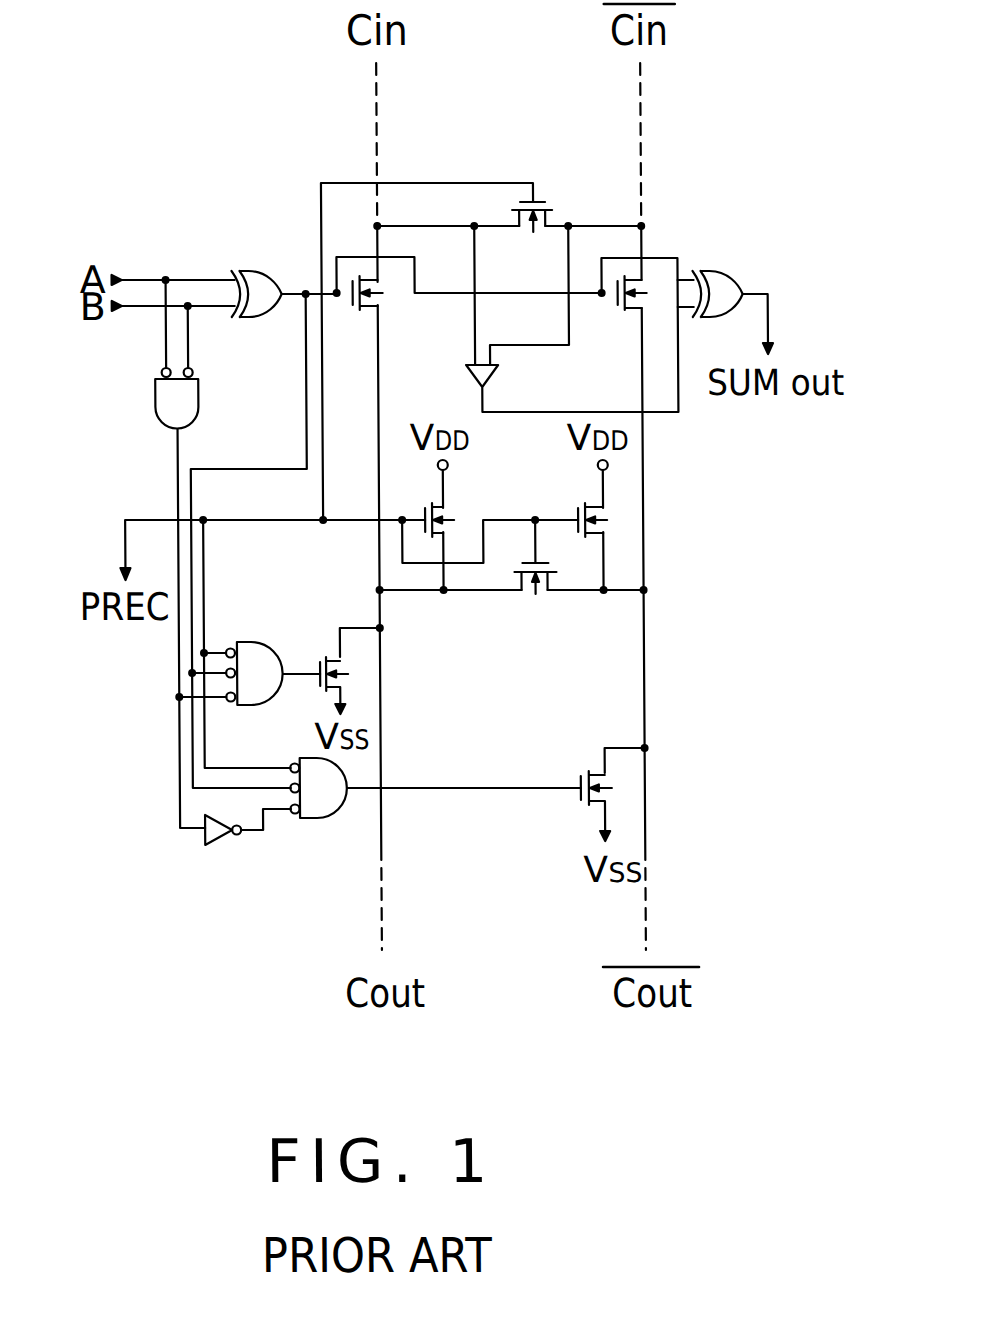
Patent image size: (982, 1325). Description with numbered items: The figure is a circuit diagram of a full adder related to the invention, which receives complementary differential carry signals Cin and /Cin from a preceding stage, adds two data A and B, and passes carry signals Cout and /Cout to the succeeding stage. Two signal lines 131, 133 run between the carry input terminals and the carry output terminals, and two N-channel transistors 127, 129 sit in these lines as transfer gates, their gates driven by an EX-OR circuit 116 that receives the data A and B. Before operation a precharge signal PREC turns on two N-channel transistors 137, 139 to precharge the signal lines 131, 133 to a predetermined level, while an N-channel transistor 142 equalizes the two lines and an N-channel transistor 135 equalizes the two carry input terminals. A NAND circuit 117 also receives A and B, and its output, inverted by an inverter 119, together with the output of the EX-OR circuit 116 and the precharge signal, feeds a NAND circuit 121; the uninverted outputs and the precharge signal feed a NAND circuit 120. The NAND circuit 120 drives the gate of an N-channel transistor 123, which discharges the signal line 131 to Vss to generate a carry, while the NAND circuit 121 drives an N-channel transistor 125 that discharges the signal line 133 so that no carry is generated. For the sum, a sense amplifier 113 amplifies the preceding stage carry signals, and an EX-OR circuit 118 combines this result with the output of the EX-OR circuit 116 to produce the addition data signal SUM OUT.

The sense amplifier 113 is at (493, 375).
The EX-OR circuit 116 is at (247, 272).
The NAND circuit 117 is at (200, 407).
The EX-OR circuit 118 is at (716, 277).
The inverter 119 is at (218, 847).
The NAND circuit 120 is at (257, 690).
The NAND circuit 121 is at (310, 818).
The N-channel transistor 123 is at (318, 665).
The N-channel transistor 125 is at (580, 787).
The N-channel transistor 127 is at (379, 306).
The N-channel transistor 129 is at (615, 303).
The signal line 131 is at (392, 670).
The signal line 133 is at (648, 660).
The N-channel transistor 135 is at (548, 203).
The N-channel transistor 137 is at (420, 515).
The N-channel transistor 139 is at (580, 515).
The N-channel transistor 142 is at (528, 593).